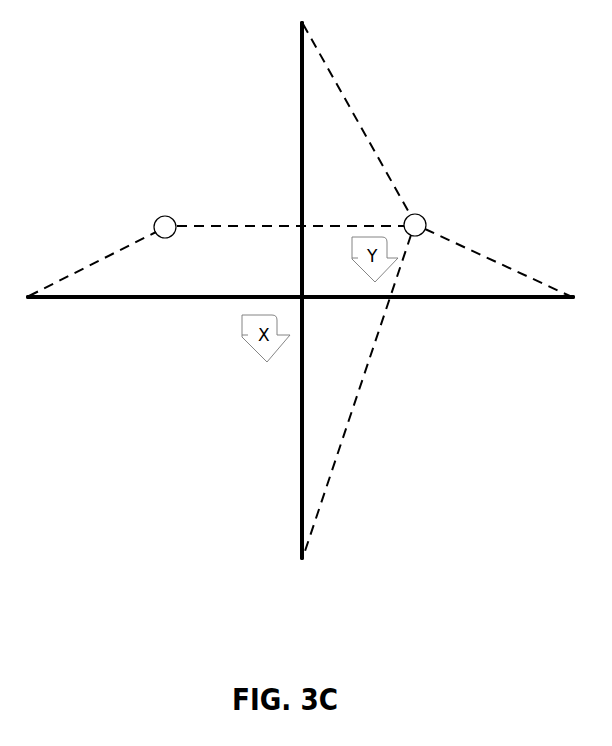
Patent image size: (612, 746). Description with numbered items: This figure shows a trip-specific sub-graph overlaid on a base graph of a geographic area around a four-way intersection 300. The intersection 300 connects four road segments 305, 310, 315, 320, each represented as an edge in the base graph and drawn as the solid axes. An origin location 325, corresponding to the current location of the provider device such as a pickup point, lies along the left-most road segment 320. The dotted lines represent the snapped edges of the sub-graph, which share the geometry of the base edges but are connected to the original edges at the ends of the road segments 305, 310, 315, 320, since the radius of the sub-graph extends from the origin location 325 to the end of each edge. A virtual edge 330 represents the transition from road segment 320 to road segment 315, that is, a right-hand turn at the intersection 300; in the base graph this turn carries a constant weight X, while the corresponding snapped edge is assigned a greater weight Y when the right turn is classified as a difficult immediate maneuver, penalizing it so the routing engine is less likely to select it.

The four-way intersection 300 is at (287, 287).
The road segment 305 is at (288, 47).
The road segment 310 is at (568, 339).
The road segment 315 is at (285, 549).
The road segment 320 is at (83, 344).
The origin location 325 is at (206, 206).
The virtual edge 330 is at (480, 212).